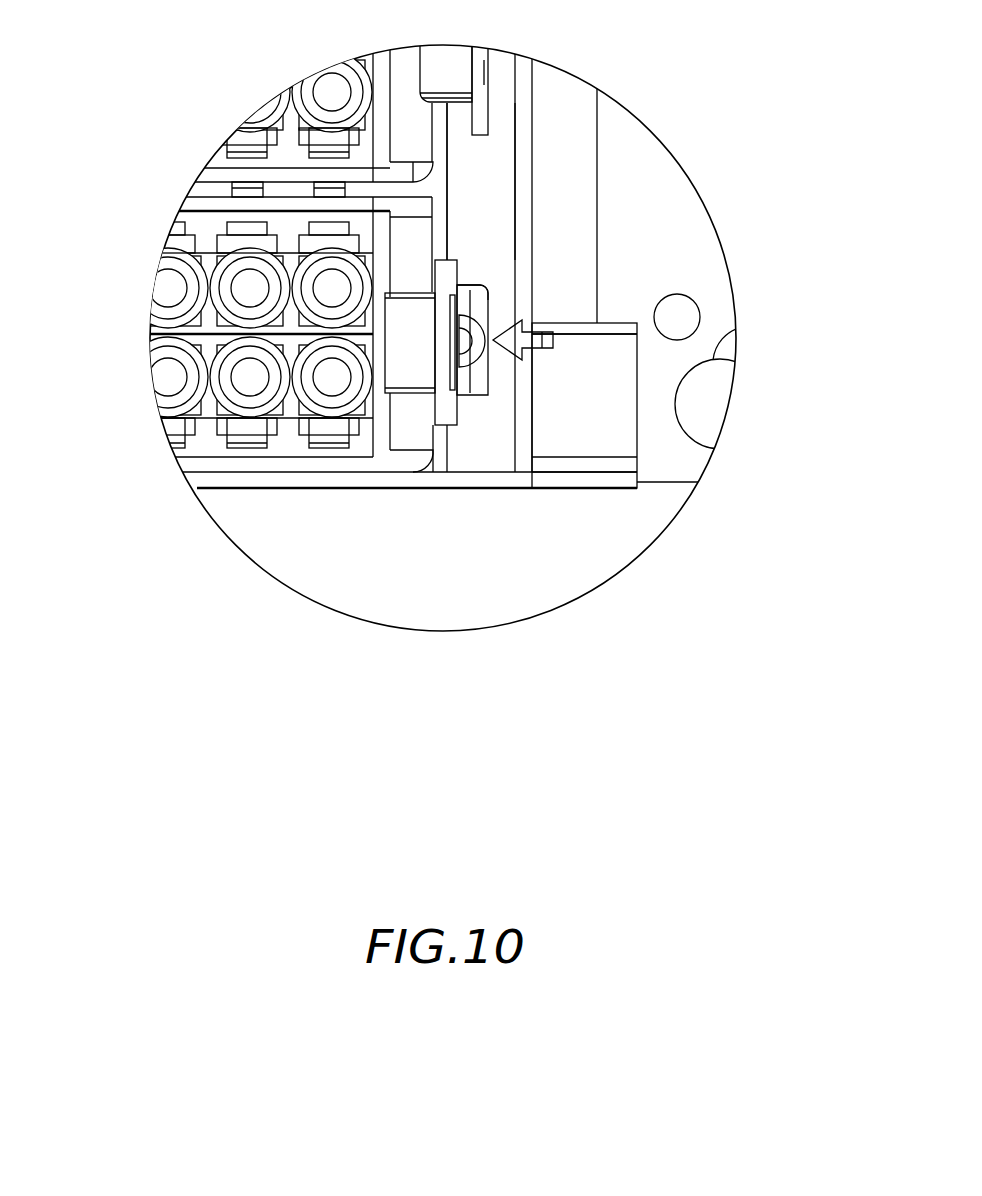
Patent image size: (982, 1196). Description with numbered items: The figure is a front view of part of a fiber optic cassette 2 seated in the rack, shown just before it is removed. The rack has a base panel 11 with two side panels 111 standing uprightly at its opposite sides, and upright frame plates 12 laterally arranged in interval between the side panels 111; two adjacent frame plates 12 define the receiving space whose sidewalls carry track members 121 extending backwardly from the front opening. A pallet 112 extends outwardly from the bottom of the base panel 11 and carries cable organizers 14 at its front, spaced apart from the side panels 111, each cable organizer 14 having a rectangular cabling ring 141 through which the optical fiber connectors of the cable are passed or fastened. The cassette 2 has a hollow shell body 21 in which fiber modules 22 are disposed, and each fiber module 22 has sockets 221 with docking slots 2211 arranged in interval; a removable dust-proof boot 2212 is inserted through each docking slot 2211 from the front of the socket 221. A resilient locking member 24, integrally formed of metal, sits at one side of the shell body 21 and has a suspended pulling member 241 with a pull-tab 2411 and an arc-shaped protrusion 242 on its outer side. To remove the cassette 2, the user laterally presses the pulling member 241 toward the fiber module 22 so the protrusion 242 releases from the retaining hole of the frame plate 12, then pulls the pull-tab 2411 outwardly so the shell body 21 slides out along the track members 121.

The fiber optic cassette 2 is at (244, 258).
The shell body 21 is at (217, 203).
The fiber module 22 is at (128, 122).
The socket 221 is at (195, 215).
The docking slot 2211 is at (160, 225).
The dust-proof boot 2212 is at (172, 285).
The resilient locking member 24 is at (388, 444).
The pulling member 241 is at (443, 405).
The pull-tab 2411 is at (402, 363).
The arc-shaped protrusion 242 is at (472, 368).
The base panel 11 is at (472, 341).
The side panel 111 is at (525, 120).
The pallet 112 is at (553, 480).
The frame plate 12 is at (497, 198).
The track member 121 is at (478, 288).
The cable organizer 14 is at (685, 466).
The cabling ring 141 is at (598, 438).